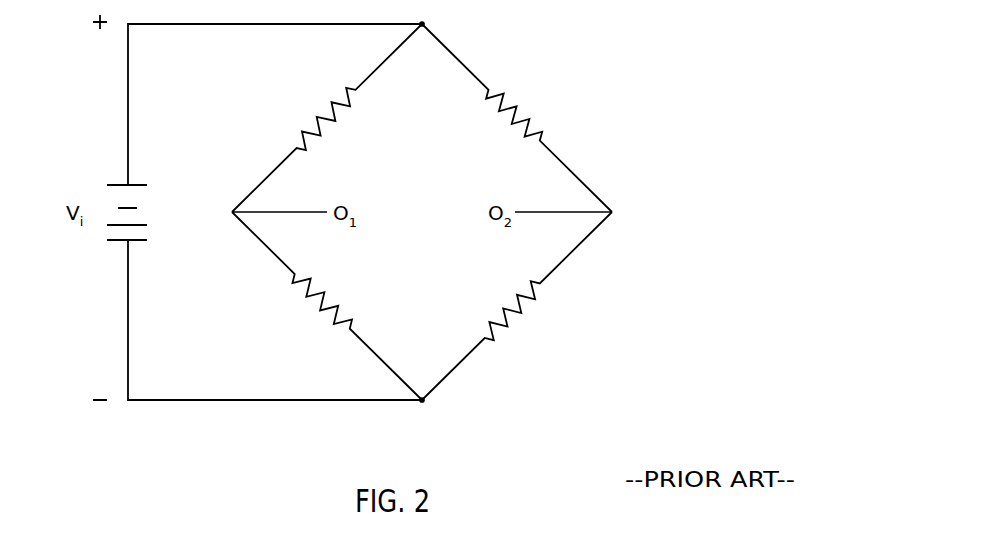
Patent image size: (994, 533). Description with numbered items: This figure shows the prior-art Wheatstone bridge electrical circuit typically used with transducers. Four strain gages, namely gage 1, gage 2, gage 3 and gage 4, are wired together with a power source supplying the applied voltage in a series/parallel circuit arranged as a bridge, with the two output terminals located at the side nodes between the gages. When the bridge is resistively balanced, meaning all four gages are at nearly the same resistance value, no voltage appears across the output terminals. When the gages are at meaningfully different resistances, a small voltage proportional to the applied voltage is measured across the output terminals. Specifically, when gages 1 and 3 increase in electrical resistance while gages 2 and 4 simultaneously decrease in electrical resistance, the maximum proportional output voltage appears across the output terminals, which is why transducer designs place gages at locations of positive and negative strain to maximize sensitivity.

The strain gage 1 is at (517, 118).
The strain gage 2 is at (517, 306).
The strain gage 3 is at (327, 306).
The strain gage 4 is at (327, 118).